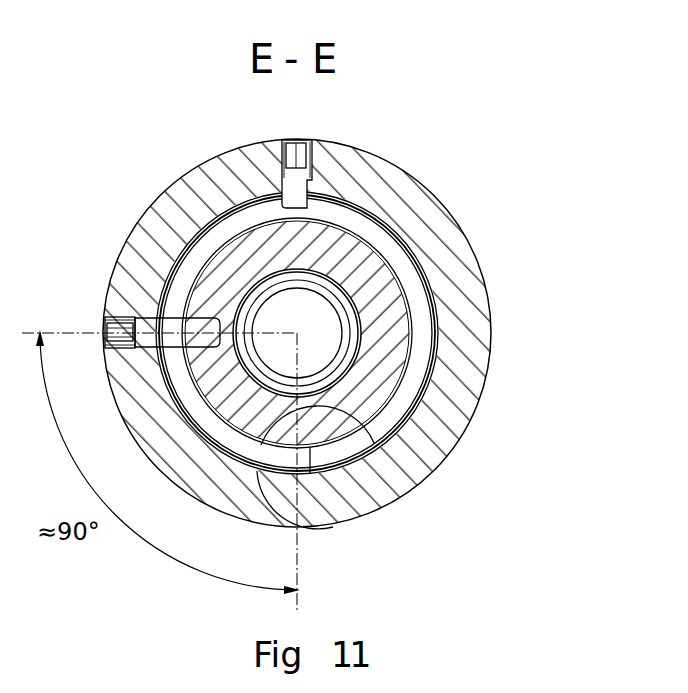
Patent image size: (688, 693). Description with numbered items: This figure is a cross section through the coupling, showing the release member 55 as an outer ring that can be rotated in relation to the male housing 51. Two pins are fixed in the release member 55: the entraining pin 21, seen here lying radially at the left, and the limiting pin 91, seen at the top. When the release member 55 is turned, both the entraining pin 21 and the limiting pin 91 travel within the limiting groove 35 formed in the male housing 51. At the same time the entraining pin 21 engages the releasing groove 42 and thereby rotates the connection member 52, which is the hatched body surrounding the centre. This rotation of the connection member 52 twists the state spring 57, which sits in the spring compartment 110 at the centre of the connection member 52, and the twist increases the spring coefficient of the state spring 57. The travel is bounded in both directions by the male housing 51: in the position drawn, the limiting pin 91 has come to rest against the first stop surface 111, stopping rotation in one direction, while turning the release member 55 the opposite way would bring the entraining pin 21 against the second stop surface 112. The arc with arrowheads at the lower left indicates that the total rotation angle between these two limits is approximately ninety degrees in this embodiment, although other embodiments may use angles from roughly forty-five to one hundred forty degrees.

The entraining pin 21 is at (163, 278).
The limiting groove 35 is at (380, 437).
The releasing groove 42 is at (160, 198).
The male housing 51 is at (377, 232).
The connection member 52 is at (368, 277).
The release member 55 is at (158, 228).
The state spring 57 is at (350, 338).
The limiting pin 91 is at (310, 183).
The spring compartment 110 is at (310, 326).
The first stop surface 111 is at (212, 212).
The second stop surface 112 is at (333, 527).